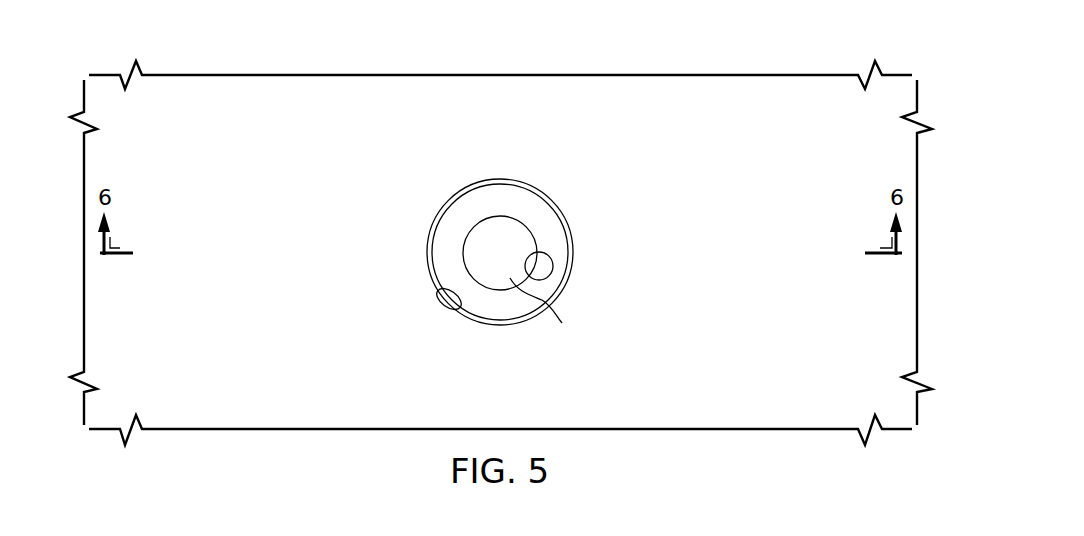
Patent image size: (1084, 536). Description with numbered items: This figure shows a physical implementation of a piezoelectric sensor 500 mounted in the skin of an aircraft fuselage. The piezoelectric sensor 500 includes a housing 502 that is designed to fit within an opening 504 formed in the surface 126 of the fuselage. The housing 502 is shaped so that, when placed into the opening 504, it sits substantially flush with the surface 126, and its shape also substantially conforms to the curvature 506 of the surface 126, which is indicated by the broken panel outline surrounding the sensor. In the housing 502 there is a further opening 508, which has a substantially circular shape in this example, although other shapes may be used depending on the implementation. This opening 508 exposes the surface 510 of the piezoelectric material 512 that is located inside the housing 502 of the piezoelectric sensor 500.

The surface 126 is at (522, 392).
The piezoelectric sensor 500 is at (501, 237).
The housing 502 is at (547, 194).
The opening 504 is at (442, 292).
The curvature 506 is at (296, 104).
The opening 508 is at (553, 272).
The surface 510 is at (498, 215).
The piezoelectric material 512 is at (546, 315).